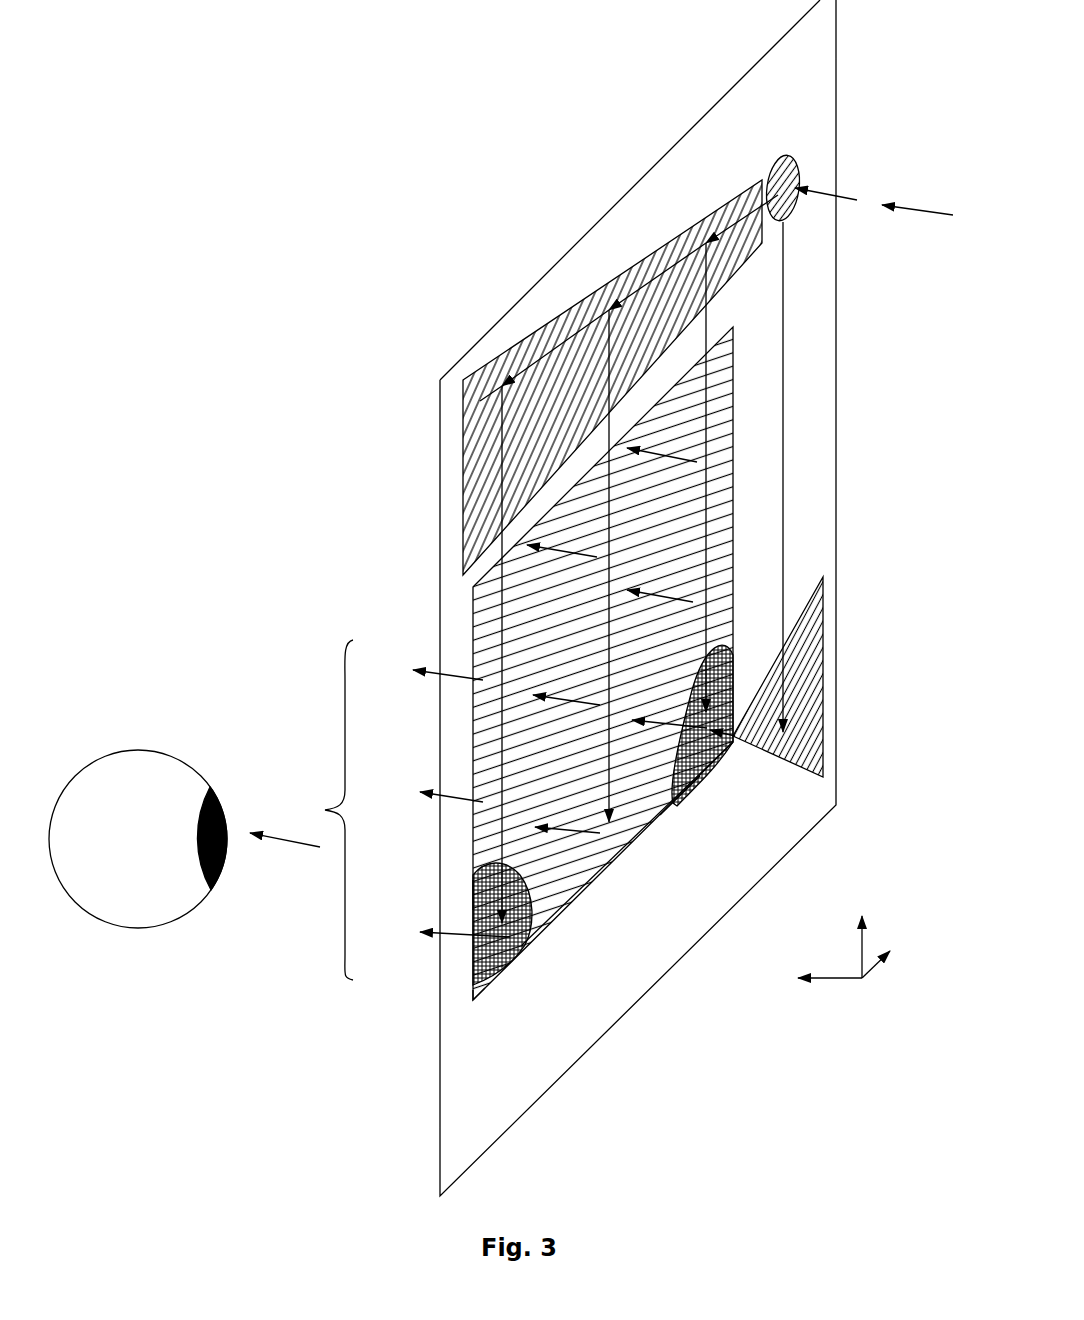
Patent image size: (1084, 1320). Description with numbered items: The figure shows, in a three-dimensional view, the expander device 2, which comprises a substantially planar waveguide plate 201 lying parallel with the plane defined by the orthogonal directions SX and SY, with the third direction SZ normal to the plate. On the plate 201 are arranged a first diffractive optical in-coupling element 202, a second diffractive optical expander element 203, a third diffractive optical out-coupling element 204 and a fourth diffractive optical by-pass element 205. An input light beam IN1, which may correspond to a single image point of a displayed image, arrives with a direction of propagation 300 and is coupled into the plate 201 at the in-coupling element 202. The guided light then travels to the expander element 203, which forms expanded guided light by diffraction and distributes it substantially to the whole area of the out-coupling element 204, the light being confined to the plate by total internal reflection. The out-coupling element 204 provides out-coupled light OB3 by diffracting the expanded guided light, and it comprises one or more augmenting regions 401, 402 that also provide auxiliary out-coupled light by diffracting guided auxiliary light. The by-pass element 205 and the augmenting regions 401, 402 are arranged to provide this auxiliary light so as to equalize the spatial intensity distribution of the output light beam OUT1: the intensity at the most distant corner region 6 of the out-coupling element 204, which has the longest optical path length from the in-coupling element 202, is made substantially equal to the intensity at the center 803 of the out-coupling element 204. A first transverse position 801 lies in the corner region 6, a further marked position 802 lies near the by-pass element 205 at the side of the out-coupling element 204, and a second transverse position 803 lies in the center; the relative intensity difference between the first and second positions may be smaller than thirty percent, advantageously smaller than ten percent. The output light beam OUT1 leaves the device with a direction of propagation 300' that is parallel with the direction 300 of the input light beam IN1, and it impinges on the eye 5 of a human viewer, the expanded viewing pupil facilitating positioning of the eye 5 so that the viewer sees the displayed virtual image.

The expander device 2 is at (418, 167).
The eye 5 is at (138, 748).
The first corner region 6 is at (476, 1007).
The waveguide plate 201 is at (600, 217).
The first diffractive optical in-coupling element 202 is at (780, 153).
The second diffractive optical expander element 203 is at (478, 360).
The third diffractive optical out-coupling element 204 is at (470, 612).
The fourth diffractive optical by-pass element 205 is at (828, 693).
The direction of propagation 300 is at (917, 241).
The direction of propagation 300' is at (285, 870).
The augmenting region 401 is at (470, 897).
The augmenting region 402 is at (685, 795).
The first transverse position 801 is at (525, 955).
The second auxiliary region 802 is at (720, 758).
The second transverse position 803 is at (640, 847).
The input light beam IN1 is at (850, 200).
The output light beam OUT1 is at (305, 810).
The out-coupled light OB3 is at (434, 814).
The direction SX is at (896, 953).
The direction SY is at (864, 931).
The direction SZ is at (811, 979).